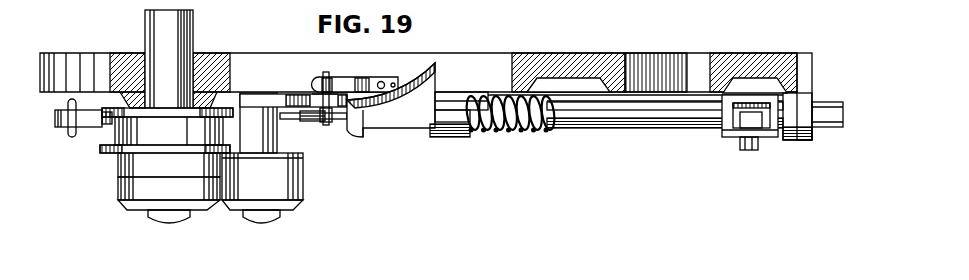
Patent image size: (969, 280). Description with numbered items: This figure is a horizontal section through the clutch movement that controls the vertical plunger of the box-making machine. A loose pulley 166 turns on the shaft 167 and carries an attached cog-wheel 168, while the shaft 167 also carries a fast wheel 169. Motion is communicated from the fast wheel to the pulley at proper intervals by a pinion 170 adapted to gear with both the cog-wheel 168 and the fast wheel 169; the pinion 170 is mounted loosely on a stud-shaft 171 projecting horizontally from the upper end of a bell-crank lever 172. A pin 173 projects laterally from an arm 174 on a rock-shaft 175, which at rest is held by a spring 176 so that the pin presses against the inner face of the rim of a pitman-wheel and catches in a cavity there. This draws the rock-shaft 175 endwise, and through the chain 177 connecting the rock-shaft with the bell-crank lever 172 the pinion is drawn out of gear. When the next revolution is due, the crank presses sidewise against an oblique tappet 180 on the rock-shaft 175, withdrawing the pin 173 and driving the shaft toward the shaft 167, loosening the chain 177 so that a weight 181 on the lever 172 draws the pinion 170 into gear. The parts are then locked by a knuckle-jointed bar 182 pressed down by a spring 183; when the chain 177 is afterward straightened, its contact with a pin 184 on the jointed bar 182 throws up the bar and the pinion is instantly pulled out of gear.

The loose pulley 166 is at (167, 126).
The shaft 167 is at (160, 41).
The cog-wheel 168 is at (169, 165).
The fast wheel 169 is at (169, 200).
The pinion 170 is at (262, 188).
The stud-shaft 171 is at (258, 123).
The bell-crank lever 172 is at (83, 118).
The pin 173 is at (747, 150).
The arm 174 is at (741, 120).
The rock-shaft 175 is at (635, 111).
The spring 176 is at (511, 121).
The chain 177 is at (313, 121).
The oblique tappet 180 is at (417, 100).
The weight 181 is at (325, 100).
The knuckle-jointed bar 182 is at (293, 101).
The spring 183 is at (355, 84).
The pin 184 is at (326, 102).